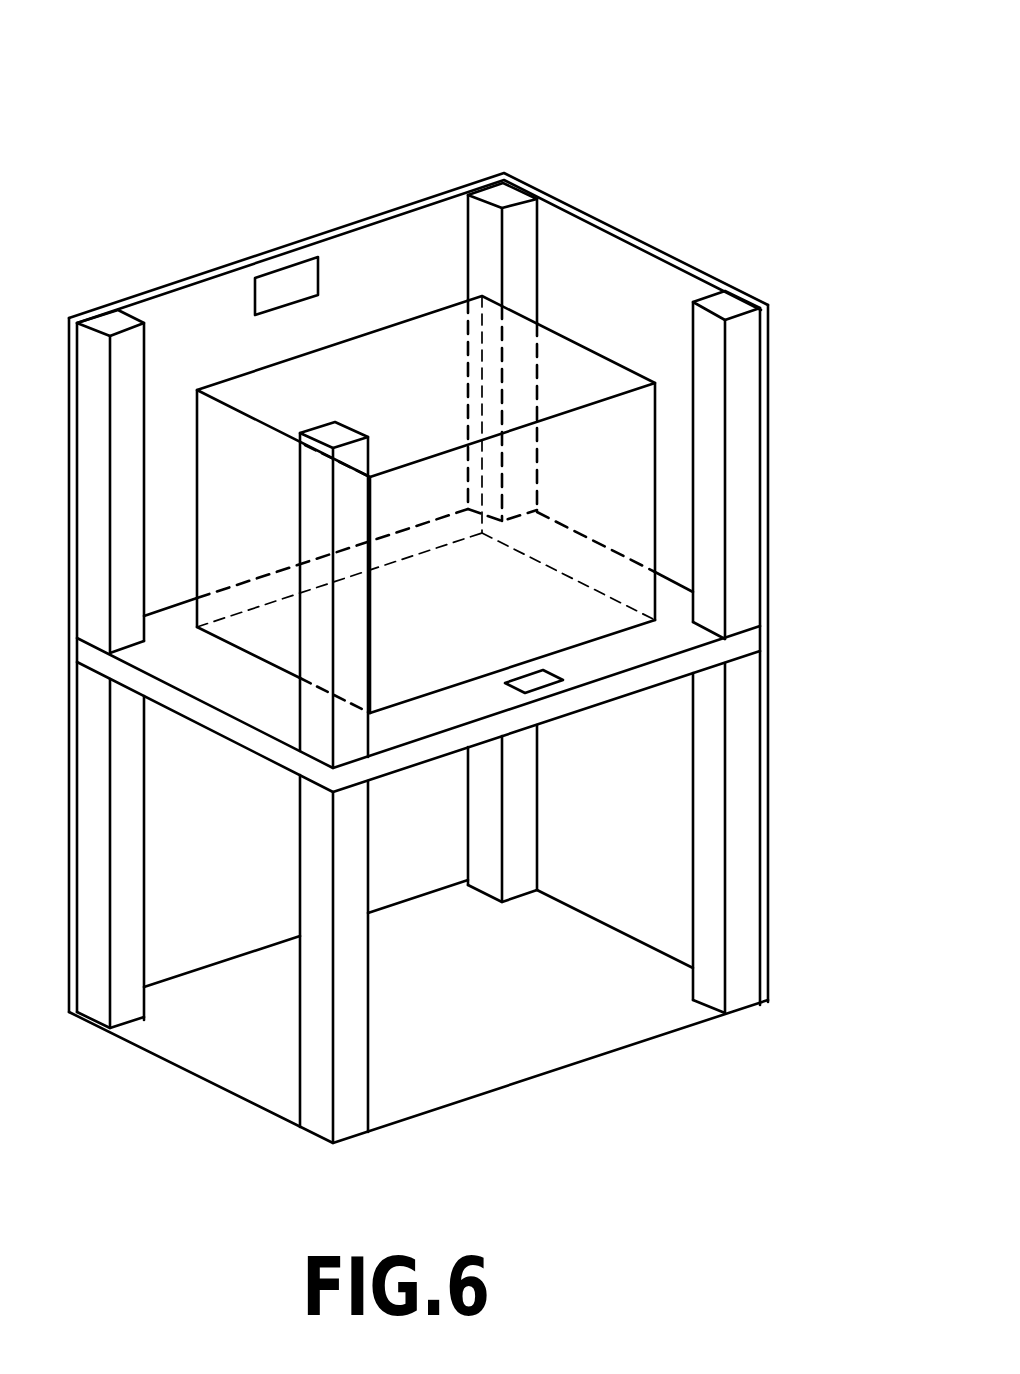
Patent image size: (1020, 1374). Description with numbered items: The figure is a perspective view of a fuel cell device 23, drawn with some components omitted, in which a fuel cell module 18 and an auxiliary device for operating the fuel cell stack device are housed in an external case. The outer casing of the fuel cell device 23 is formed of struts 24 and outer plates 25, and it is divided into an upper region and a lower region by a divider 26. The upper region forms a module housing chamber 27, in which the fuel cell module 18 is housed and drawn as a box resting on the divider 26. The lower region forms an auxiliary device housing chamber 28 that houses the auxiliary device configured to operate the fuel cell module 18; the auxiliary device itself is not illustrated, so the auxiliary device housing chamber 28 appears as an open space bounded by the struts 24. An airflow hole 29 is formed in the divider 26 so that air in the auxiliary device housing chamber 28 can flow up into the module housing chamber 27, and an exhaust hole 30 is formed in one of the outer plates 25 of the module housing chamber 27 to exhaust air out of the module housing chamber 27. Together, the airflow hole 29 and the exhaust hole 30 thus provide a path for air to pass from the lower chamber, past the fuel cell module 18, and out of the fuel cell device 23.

The fuel cell module 18 is at (577, 365).
The fuel cell device 23 is at (340, 100).
The strut 24 is at (110, 314).
The outer plate 25 is at (562, 195).
The divider 26 is at (745, 646).
The module housing chamber 27 is at (592, 277).
The auxiliary device housing chamber 28 is at (203, 845).
The airflow hole 29 is at (548, 681).
The exhaust hole 30 is at (277, 285).